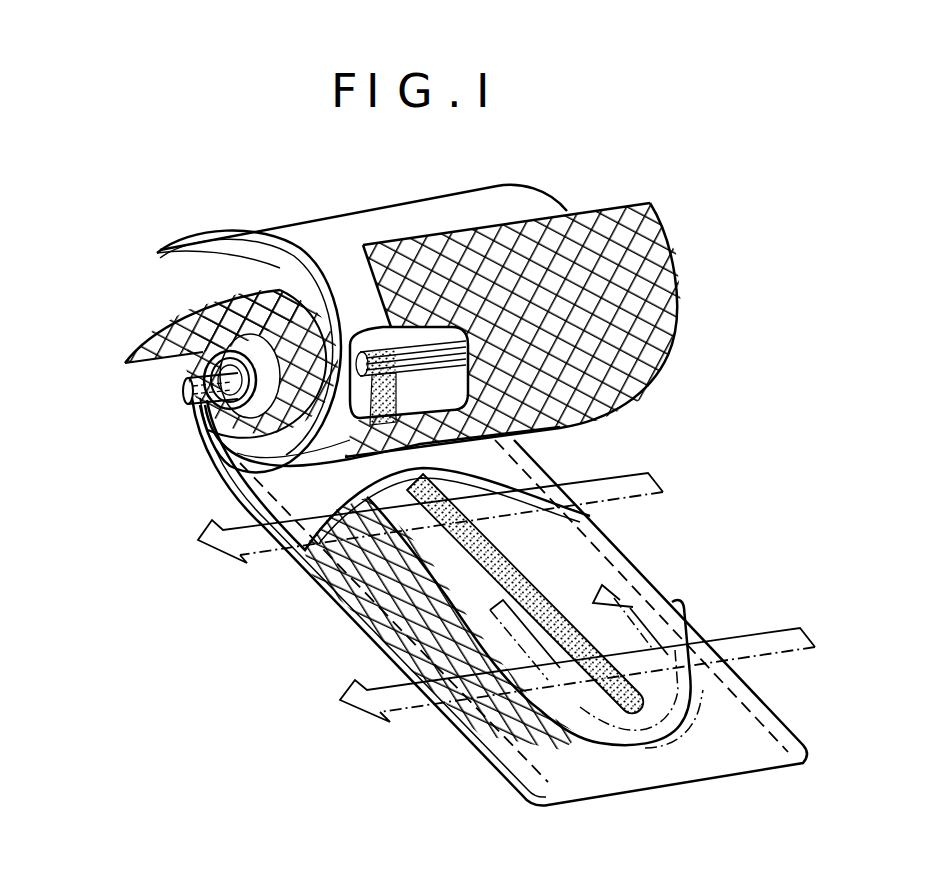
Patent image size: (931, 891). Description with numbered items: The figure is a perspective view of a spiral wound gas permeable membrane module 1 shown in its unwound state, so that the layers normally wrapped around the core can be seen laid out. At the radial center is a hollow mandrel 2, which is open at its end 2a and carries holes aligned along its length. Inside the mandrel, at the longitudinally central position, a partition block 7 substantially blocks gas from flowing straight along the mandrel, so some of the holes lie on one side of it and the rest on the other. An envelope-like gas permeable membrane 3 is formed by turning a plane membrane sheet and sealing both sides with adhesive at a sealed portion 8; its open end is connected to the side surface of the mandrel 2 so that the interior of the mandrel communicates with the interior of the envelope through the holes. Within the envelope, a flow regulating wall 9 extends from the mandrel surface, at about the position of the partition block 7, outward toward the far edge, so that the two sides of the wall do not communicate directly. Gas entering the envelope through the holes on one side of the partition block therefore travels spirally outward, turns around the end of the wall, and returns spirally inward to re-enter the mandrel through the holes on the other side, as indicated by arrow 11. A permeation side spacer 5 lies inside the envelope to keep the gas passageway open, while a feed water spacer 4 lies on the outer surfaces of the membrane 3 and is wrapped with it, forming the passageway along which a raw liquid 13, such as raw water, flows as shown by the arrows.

The spiral wound gas permeable membrane module 1 is at (585, 212).
The hollow mandrel 2 is at (190, 412).
The end of hollow mandrel 2a is at (184, 396).
The envelope-like gas permeable membrane 3 is at (410, 215).
The feed water spacer 4 is at (160, 320).
The permeation side spacer 5 is at (342, 612).
The partition block 7 is at (383, 342).
The sealed portion 8 is at (680, 602).
The flow regulating wall 9 is at (497, 563).
The arrow 11 is at (625, 603).
The raw liquid 13 is at (640, 470).